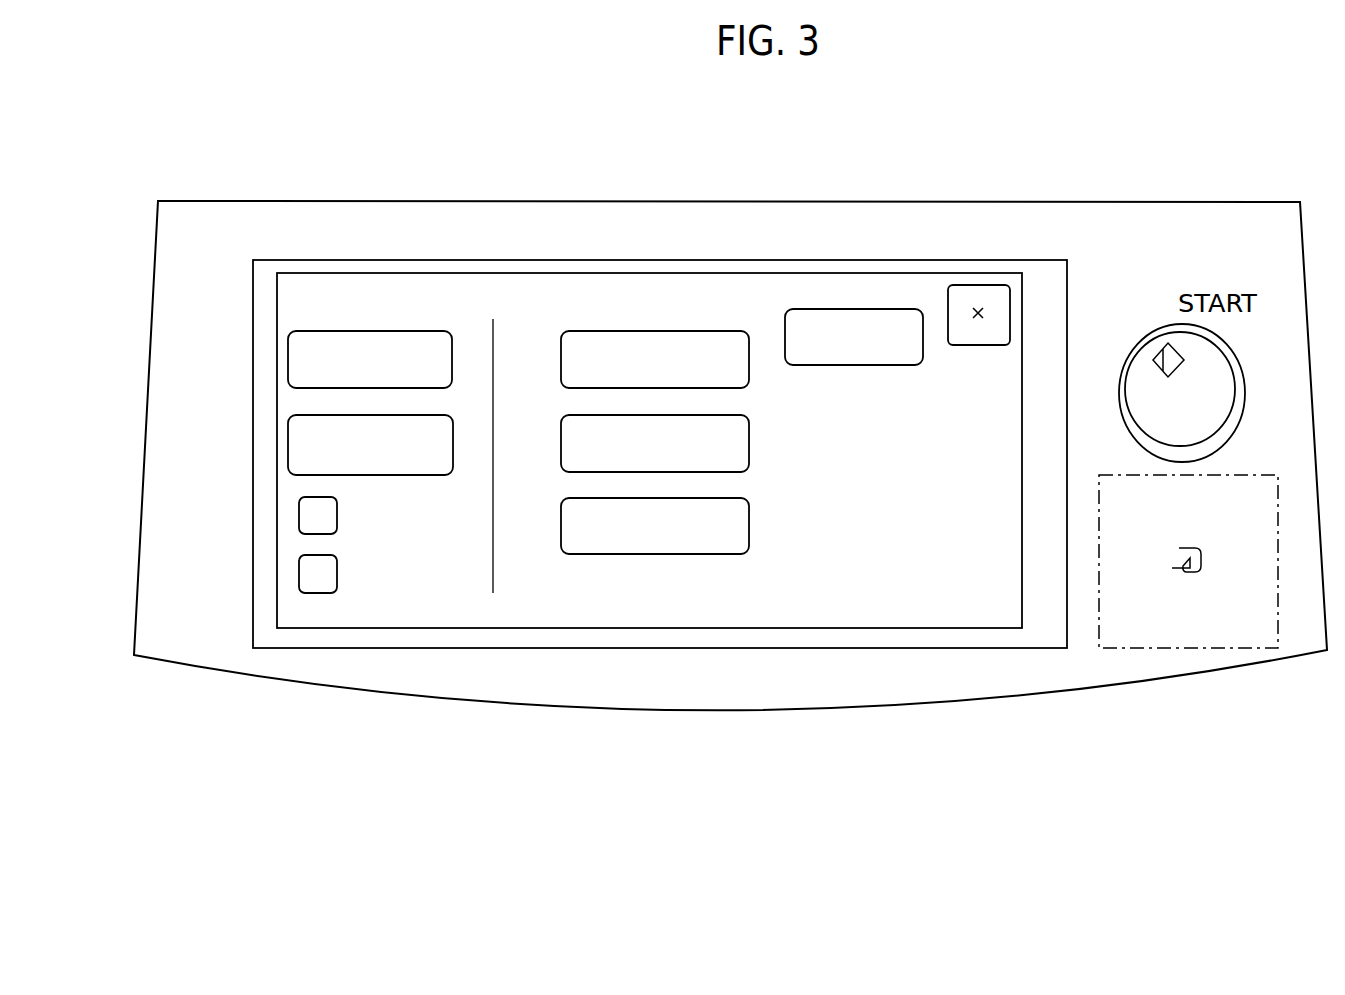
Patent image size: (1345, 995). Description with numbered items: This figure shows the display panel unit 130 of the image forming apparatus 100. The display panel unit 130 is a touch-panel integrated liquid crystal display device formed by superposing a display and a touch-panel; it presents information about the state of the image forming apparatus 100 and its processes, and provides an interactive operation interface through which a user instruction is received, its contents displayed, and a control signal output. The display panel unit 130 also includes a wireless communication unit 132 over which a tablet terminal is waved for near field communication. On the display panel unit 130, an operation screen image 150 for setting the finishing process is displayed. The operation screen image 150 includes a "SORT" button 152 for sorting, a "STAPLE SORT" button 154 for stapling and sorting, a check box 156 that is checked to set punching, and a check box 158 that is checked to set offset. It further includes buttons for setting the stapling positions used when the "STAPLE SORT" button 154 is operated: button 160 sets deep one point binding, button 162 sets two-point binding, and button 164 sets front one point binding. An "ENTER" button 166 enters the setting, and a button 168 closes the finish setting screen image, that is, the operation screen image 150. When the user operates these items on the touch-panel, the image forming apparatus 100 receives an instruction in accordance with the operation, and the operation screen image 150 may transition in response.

The image forming apparatus 100 is at (676, 200).
The display panel unit 130 is at (627, 607).
The wireless communication unit 132 is at (1167, 640).
The operation screen image 150 is at (524, 312).
The "SORT" button 152 is at (296, 367).
The "STAPLE SORT" button 154 is at (296, 453).
The check box 156 is at (301, 517).
The check box 158 is at (305, 580).
The button 160 is at (645, 338).
The button 162 is at (730, 420).
The button 164 is at (742, 533).
The "ENTER" button 166 is at (822, 311).
The button 168 is at (984, 335).